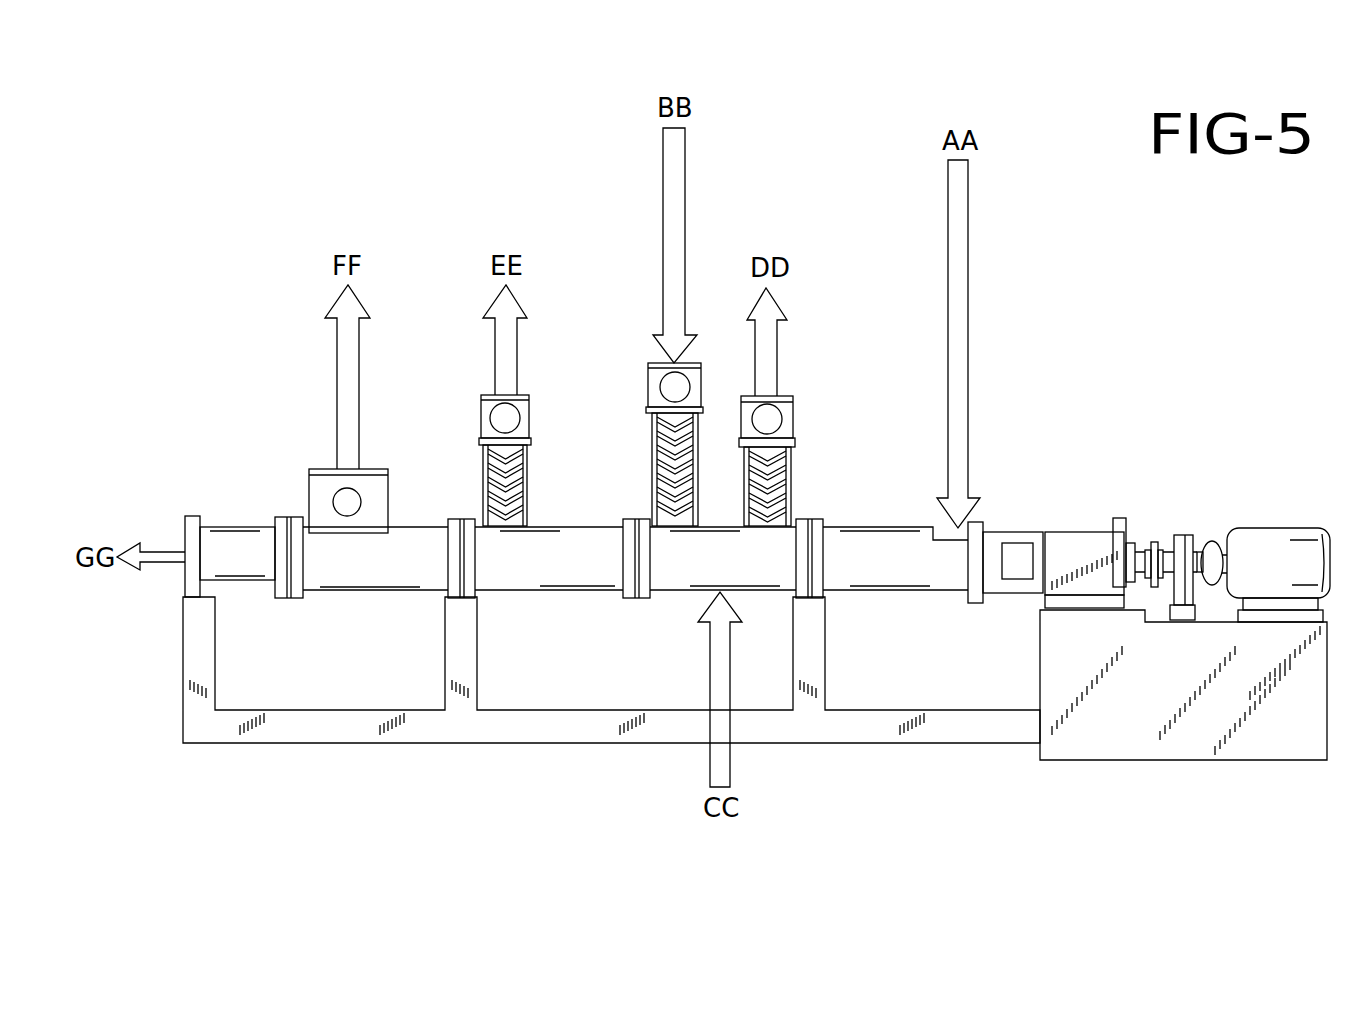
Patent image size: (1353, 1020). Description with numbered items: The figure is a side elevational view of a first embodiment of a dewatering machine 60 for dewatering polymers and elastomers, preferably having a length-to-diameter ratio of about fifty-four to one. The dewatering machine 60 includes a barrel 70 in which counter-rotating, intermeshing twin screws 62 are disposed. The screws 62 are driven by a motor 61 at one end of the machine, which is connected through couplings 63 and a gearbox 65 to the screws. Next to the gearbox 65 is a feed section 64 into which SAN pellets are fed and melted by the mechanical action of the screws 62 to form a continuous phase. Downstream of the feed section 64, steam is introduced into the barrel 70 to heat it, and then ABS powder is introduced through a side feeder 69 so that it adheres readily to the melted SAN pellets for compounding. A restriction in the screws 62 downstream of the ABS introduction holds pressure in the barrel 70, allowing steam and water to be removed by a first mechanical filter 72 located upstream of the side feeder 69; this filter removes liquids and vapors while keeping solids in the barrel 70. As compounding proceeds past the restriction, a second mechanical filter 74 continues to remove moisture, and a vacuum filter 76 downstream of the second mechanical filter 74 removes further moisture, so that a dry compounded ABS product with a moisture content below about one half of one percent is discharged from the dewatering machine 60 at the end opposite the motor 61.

The dewatering machine 60 is at (1207, 335).
The motor 61 is at (1267, 528).
The twin screws 62 is at (183, 572).
The couplings 63 is at (1153, 542).
The feed section 64 is at (945, 539).
The gearbox 65 is at (1077, 532).
The side feeder 69 is at (653, 455).
The barrel 70 is at (608, 592).
The first mechanical filter 72 is at (795, 412).
The second mechanical filter 74 is at (480, 413).
The vacuum filter 76 is at (307, 487).